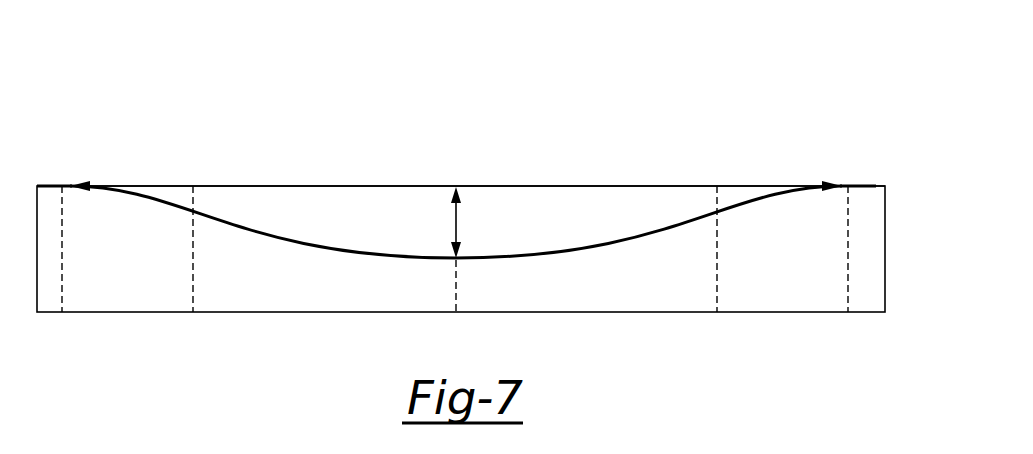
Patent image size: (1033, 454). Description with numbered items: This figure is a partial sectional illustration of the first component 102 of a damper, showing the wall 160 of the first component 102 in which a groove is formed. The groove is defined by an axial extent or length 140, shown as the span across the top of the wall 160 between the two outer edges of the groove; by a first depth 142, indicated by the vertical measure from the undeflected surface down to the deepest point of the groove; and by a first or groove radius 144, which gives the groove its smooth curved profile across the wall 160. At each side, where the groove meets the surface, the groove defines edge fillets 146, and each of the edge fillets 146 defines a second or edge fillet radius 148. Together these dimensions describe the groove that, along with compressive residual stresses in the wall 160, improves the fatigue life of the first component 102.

The first component 102 is at (461, 196).
The axial extent or length 140 is at (565, 186).
The first depth 142 is at (450, 225).
The groove radius 144 is at (456, 175).
The edge fillets 146 is at (782, 188).
The edge fillet radius 148 is at (150, 198).
The wall 160 is at (802, 276).